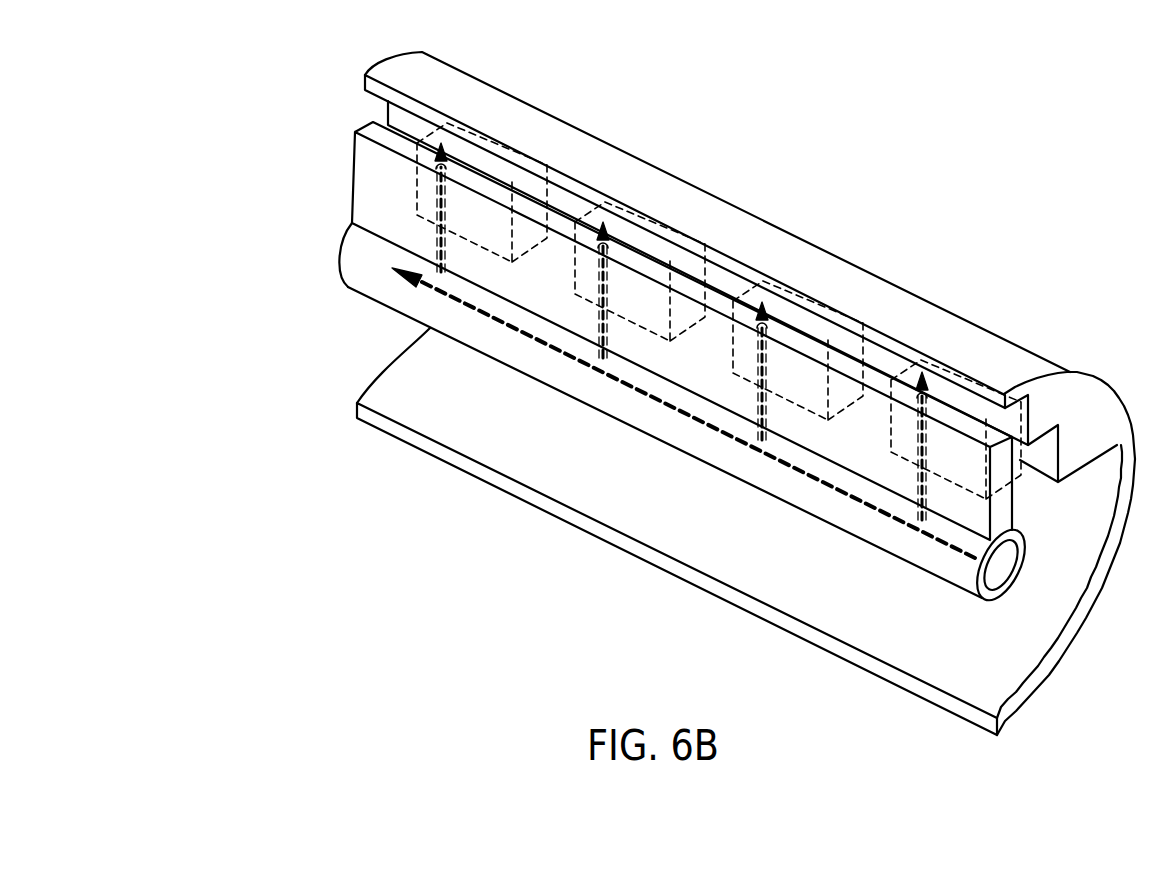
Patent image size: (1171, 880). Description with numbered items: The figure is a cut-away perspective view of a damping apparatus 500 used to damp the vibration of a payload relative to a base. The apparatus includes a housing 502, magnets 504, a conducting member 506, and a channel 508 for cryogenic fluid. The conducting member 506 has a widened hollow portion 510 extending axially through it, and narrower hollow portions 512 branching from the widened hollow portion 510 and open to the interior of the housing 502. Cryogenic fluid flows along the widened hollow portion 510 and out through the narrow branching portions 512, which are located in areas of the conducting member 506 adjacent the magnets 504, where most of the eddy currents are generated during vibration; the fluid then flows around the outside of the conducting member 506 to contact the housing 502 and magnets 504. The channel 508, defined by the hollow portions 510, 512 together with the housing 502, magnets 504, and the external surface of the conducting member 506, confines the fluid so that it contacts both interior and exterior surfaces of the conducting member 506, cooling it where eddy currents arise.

The damping apparatus 500 is at (264, 95).
The housing 502 is at (1103, 532).
The magnets 504 is at (626, 245).
The conducting member 506 is at (985, 518).
The channel 508 is at (996, 582).
The widened hollow portion 510 is at (475, 327).
The narrow branching portions 512 is at (413, 221).